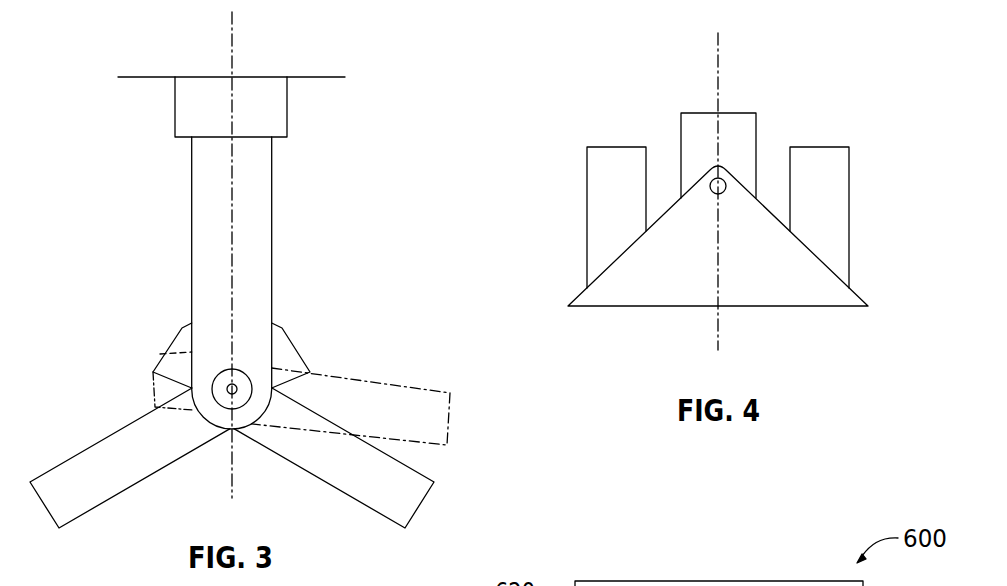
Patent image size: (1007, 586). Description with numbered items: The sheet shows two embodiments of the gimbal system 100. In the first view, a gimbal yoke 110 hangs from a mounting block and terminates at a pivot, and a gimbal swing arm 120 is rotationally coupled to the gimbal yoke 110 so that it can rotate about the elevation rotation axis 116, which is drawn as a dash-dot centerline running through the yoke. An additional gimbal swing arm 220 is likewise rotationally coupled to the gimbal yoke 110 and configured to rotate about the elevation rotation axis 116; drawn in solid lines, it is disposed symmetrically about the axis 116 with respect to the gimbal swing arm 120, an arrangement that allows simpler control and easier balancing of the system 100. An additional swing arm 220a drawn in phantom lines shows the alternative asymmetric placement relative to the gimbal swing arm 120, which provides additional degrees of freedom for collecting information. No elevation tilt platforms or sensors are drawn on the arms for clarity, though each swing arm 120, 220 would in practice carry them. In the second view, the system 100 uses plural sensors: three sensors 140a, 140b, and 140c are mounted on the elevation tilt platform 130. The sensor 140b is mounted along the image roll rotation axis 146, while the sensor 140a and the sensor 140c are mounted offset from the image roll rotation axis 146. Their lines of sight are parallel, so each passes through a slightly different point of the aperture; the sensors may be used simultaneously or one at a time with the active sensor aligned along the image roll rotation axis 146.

In FIG. 3, the system 100 is at (375, 37).
In FIG. 3, the elevation rotation axis 116 is at (233, 43).
In FIG. 3, the gimbal yoke 110 is at (271, 209).
In FIG. 3, the gimbal swing arm 120 is at (298, 353).
In FIG. 3, the additional gimbal swing arm 220 is at (172, 342).
In FIG. 3, the additional swing arm 220a is at (447, 433).
In FIG. 4, the image roll rotation axis 146 is at (718, 62).
In FIG. 4, the elevation tilt platform 130 is at (773, 306).
In FIG. 4, the sensor 140a is at (587, 217).
In FIG. 4, the sensor 140b is at (757, 148).
In FIG. 4, the sensor 140c is at (849, 217).